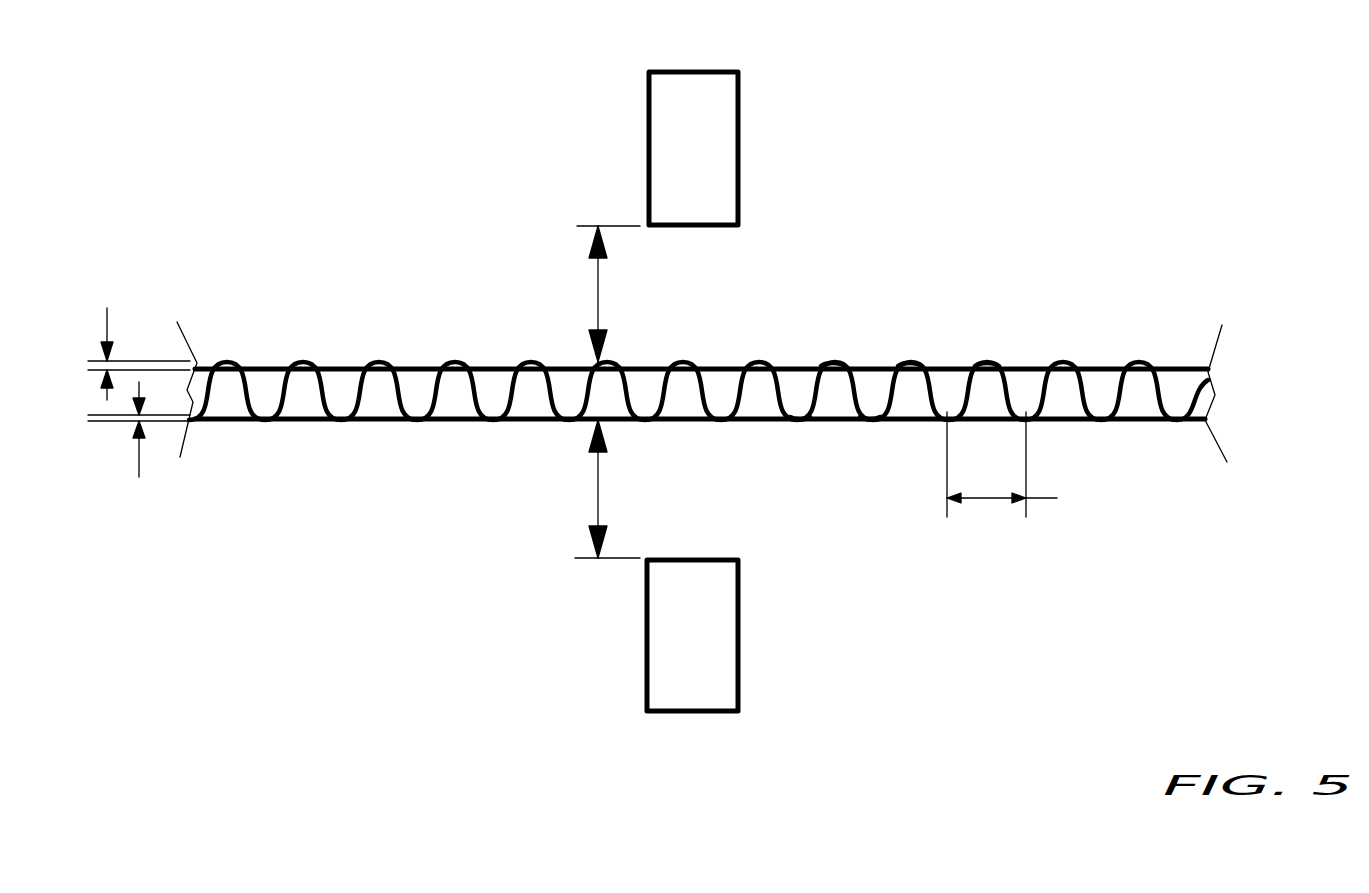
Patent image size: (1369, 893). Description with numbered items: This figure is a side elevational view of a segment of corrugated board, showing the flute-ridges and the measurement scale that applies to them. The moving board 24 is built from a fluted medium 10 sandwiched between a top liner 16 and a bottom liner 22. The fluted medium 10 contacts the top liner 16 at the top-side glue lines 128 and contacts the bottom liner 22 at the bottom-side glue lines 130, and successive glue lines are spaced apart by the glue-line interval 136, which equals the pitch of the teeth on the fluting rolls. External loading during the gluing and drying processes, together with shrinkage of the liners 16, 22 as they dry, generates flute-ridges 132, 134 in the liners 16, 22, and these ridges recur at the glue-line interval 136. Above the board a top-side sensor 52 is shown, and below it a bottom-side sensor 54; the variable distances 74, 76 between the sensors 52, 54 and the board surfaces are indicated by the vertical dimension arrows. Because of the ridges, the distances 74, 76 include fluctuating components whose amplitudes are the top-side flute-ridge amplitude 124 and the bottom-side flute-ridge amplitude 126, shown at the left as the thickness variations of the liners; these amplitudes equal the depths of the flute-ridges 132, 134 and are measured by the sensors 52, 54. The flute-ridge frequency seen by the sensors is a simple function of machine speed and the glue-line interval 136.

The fluted medium 10 is at (698, 393).
The top liner 16 is at (342, 367).
The bottom liner 22 is at (380, 417).
The moving board 24 is at (293, 392).
The top-side sensor 52 is at (740, 147).
The bottom-side sensor 54 is at (740, 603).
The variable distance 74 is at (598, 296).
The variable distance 76 is at (598, 490).
The top-side flute-ridge amplitude 124 is at (107, 327).
The bottom-side flute-ridge amplitude 126 is at (139, 468).
The top-side glue lines 128 is at (987, 377).
The bottom-side glue lines 130 is at (947, 522).
The flute-ridges 132 is at (910, 367).
The flute-ridges 134 is at (867, 428).
The glue-line interval 136 is at (1057, 498).